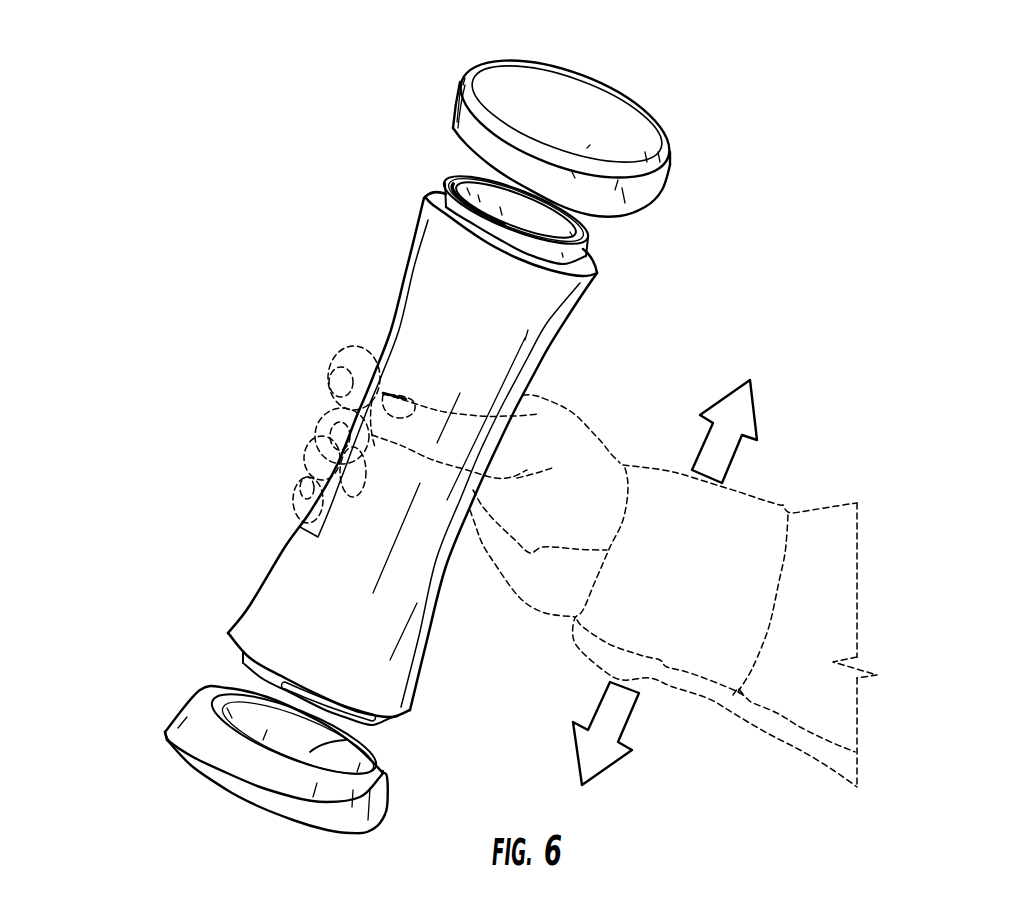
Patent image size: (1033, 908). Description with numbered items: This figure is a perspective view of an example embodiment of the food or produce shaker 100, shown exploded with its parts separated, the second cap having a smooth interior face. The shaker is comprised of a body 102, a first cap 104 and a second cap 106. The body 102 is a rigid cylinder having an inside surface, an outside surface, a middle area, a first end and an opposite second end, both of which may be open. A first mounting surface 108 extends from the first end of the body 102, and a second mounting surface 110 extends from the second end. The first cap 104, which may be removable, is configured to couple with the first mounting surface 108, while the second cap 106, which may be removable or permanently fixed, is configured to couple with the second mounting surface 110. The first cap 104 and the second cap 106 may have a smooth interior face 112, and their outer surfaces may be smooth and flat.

The produce shaker 100 is at (694, 90).
The body 102 is at (390, 336).
The first cap 104 is at (452, 130).
The second cap 106 is at (170, 730).
The first mounting surface 108 is at (588, 250).
The second mounting surface 110 is at (247, 667).
The smooth interior face 112 is at (357, 741).